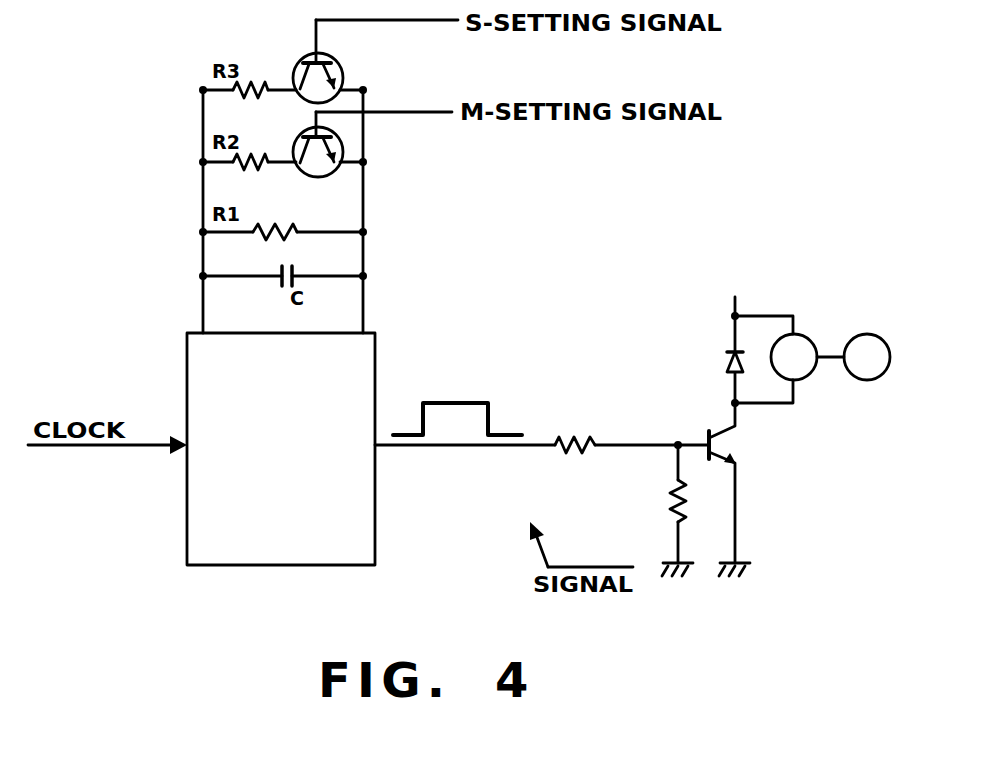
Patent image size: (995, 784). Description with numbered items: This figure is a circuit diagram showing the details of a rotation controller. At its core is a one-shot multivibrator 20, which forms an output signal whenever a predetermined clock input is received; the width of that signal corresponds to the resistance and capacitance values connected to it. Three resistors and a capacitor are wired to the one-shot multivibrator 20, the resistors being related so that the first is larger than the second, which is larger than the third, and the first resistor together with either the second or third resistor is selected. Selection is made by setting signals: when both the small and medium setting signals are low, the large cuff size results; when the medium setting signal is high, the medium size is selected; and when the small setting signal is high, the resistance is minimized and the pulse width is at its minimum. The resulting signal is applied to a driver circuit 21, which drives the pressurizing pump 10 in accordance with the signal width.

The pressurizing pump 10 is at (828, 336).
The one-shot multivibrator 20 is at (187, 511).
The driver circuit 21 is at (688, 423).